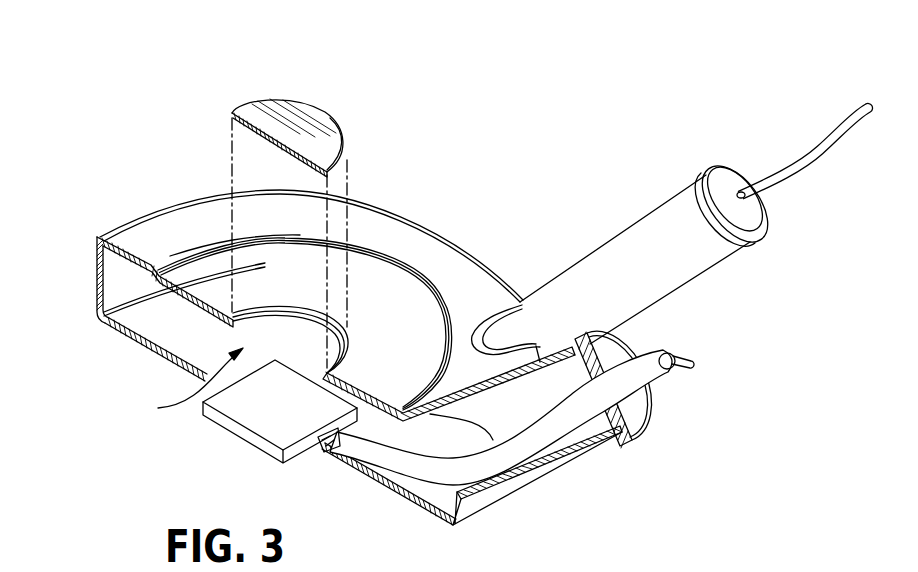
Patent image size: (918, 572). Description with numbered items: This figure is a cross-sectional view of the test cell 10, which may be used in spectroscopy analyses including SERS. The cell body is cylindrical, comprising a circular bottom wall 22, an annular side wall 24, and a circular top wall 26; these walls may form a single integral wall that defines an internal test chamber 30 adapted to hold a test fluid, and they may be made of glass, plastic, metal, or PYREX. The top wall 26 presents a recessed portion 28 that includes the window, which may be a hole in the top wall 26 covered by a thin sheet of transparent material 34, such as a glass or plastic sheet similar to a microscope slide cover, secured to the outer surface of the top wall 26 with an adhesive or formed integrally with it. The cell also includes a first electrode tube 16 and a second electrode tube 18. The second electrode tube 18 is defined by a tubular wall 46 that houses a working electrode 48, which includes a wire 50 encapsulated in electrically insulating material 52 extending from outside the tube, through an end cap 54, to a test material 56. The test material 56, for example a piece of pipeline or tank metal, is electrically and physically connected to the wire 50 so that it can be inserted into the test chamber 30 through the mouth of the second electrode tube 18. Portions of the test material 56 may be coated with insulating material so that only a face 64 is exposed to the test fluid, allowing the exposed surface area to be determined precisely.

The test cell 10 is at (128, 113).
The first electrode tube 16 is at (618, 224).
The second electrode tube 18 is at (592, 468).
The bottom wall 22 is at (127, 338).
The side wall 24 is at (97, 272).
The top wall 26 is at (124, 243).
The recessed portion 28 is at (403, 317).
The internal test chamber 30 is at (186, 385).
The thin sheet of transparent material 34 is at (283, 118).
The tubular wall 46 is at (560, 463).
The working electrode 48 is at (433, 480).
The wire 50 is at (697, 367).
The electrically insulating material 52 is at (670, 345).
The end cap 54 is at (637, 415).
The test material 56 is at (260, 450).
The face 64 is at (270, 402).